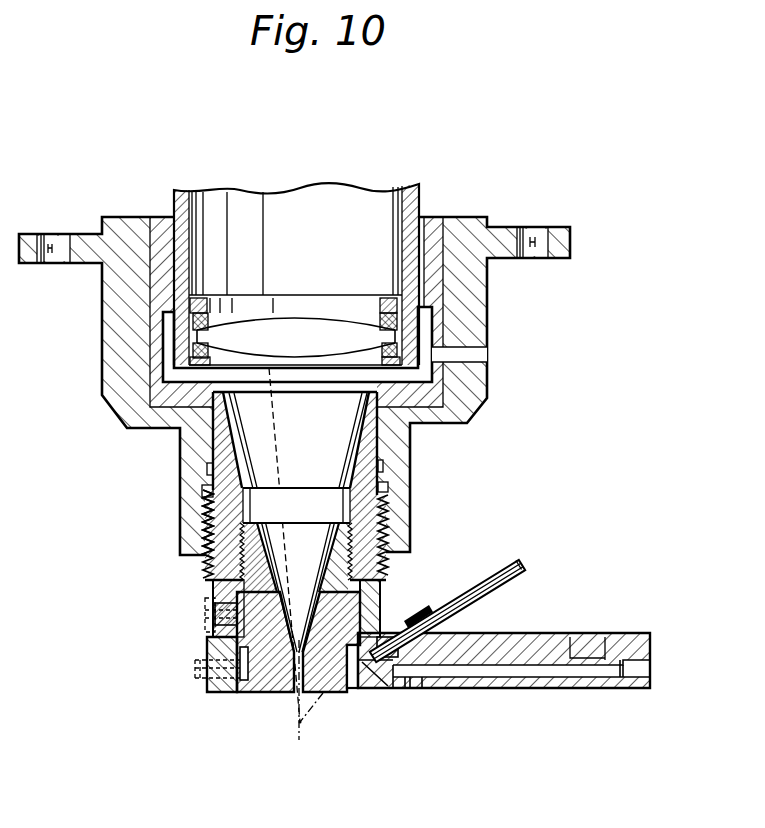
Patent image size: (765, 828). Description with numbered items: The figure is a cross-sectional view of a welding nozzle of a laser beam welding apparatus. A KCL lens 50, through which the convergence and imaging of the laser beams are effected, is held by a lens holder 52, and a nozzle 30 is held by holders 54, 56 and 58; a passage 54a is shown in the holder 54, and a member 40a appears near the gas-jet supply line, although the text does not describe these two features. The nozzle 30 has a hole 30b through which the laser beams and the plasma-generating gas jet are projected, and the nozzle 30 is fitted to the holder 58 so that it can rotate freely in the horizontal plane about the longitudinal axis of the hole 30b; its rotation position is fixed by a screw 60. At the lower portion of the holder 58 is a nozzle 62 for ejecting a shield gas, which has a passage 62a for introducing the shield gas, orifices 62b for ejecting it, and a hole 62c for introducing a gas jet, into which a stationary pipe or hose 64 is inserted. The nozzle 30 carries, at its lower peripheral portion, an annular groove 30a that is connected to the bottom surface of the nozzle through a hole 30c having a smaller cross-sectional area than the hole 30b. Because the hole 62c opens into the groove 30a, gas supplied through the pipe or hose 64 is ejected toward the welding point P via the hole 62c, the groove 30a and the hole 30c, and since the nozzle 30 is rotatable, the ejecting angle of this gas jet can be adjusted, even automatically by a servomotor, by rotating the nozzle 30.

The nozzle 30 is at (248, 692).
The annular groove 30a is at (225, 682).
The hole 30b is at (295, 672).
The hole 30c is at (352, 686).
The clamp tab 40a is at (406, 622).
The KCL lens 50 is at (352, 330).
The lens holder 52 is at (416, 198).
The holder 54 is at (478, 308).
The housing passage 54a is at (475, 352).
The holder 56 is at (223, 530).
The holder 58 is at (360, 527).
The screw 60 is at (205, 610).
The nozzle 62 is at (552, 645).
The passage 62a is at (586, 670).
The orifices 62b is at (410, 690).
The hole 62c is at (368, 672).
The pipe or hose 64 is at (516, 565).
The welding point P is at (298, 723).